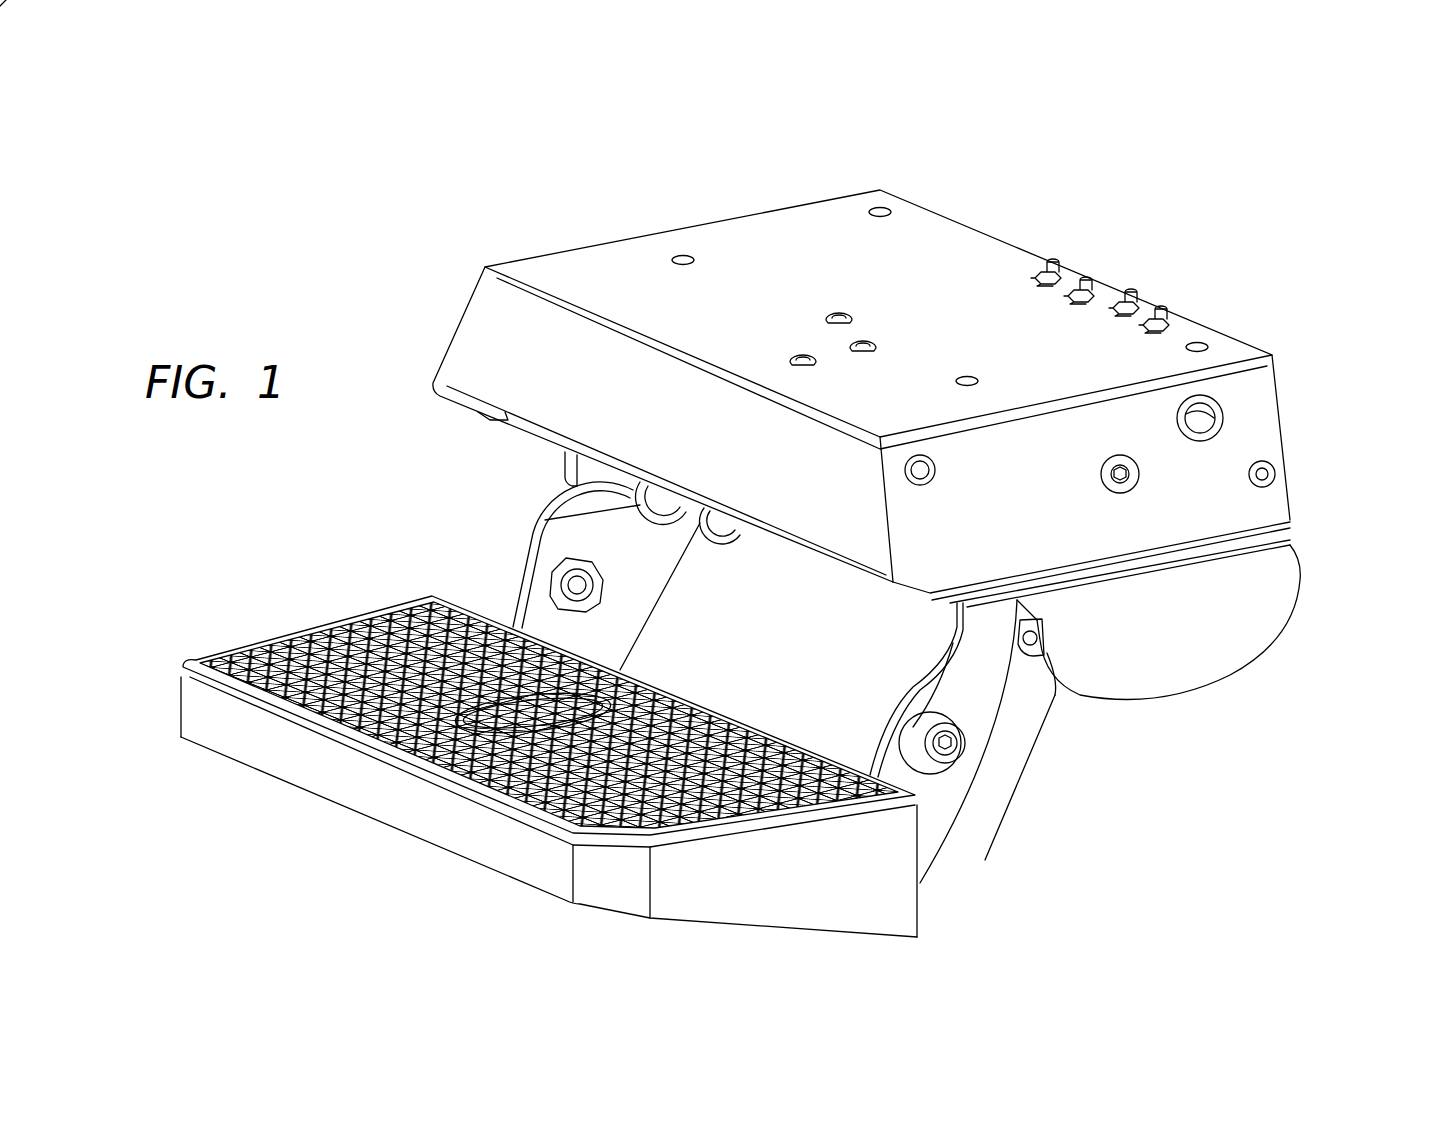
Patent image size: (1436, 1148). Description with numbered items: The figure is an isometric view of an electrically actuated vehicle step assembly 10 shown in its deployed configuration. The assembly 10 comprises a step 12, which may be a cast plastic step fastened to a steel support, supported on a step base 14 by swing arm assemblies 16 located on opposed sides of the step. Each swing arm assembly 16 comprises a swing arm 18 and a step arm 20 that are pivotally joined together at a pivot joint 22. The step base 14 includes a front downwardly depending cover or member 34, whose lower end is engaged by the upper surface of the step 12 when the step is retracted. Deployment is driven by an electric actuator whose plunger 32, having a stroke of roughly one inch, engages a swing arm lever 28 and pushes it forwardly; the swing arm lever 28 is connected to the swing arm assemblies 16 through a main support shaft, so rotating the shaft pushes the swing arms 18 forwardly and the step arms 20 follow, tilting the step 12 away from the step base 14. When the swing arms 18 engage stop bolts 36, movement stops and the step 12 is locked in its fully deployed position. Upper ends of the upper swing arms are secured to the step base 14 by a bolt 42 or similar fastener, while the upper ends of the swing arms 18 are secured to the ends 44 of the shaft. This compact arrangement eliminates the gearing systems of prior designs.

The electrically actuated vehicle step assembly 10 is at (1052, 219).
The step 12 is at (238, 762).
The step base 14 is at (772, 246).
The swing arm assembly 16 is at (527, 512).
The swing arm 18 is at (572, 462).
The step arm 20 is at (630, 541).
The pivot joint 22 is at (576, 585).
The swing arm lever 28 is at (727, 540).
The plunger 32 is at (748, 532).
The front downwardly depending member 34 is at (493, 355).
The stop bolt 36 is at (1037, 637).
The bolt 42 is at (1138, 478).
The end of the shaft 44 is at (933, 480).